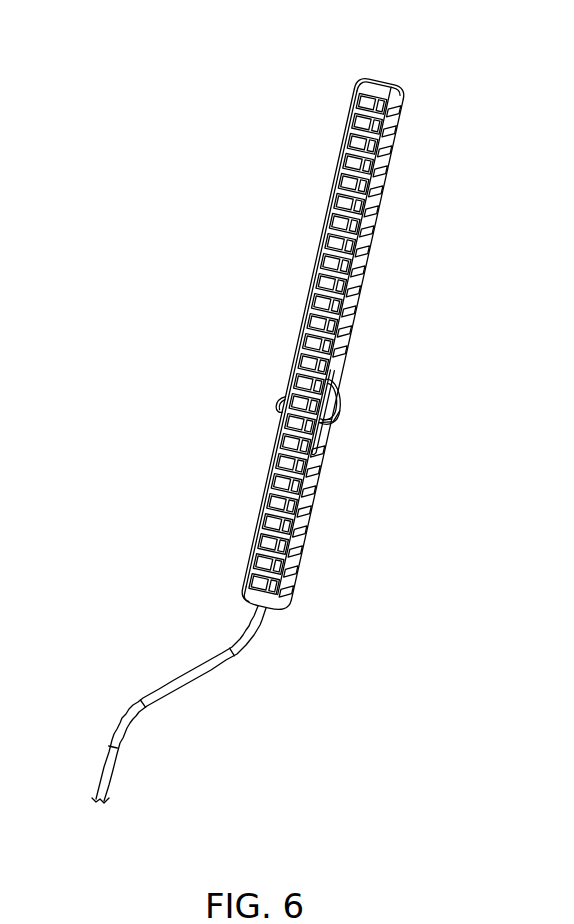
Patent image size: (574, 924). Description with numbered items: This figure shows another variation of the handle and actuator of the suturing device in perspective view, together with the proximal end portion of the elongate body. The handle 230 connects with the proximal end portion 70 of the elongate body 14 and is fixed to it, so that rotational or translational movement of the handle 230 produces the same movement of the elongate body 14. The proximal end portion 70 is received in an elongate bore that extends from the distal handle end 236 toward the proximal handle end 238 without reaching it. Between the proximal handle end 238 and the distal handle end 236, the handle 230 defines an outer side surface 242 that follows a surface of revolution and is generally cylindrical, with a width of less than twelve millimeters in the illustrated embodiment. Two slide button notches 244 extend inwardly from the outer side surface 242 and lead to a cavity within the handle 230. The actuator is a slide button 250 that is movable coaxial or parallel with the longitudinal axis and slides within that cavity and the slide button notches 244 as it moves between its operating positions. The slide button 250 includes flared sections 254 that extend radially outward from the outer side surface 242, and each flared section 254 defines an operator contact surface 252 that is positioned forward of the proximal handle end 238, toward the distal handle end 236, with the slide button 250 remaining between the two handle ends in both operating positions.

The elongate body 14 is at (118, 686).
The proximal end portion 70 is at (250, 638).
The handle 230 is at (394, 298).
The distal handle end 236 is at (267, 610).
The proximal handle end 238 is at (390, 82).
The outer side surface 242 is at (334, 229).
The slide button notch 244 is at (322, 446).
The slide button 250 is at (283, 406).
The operator contact surface 252 is at (336, 397).
The flared section 254 is at (337, 412).